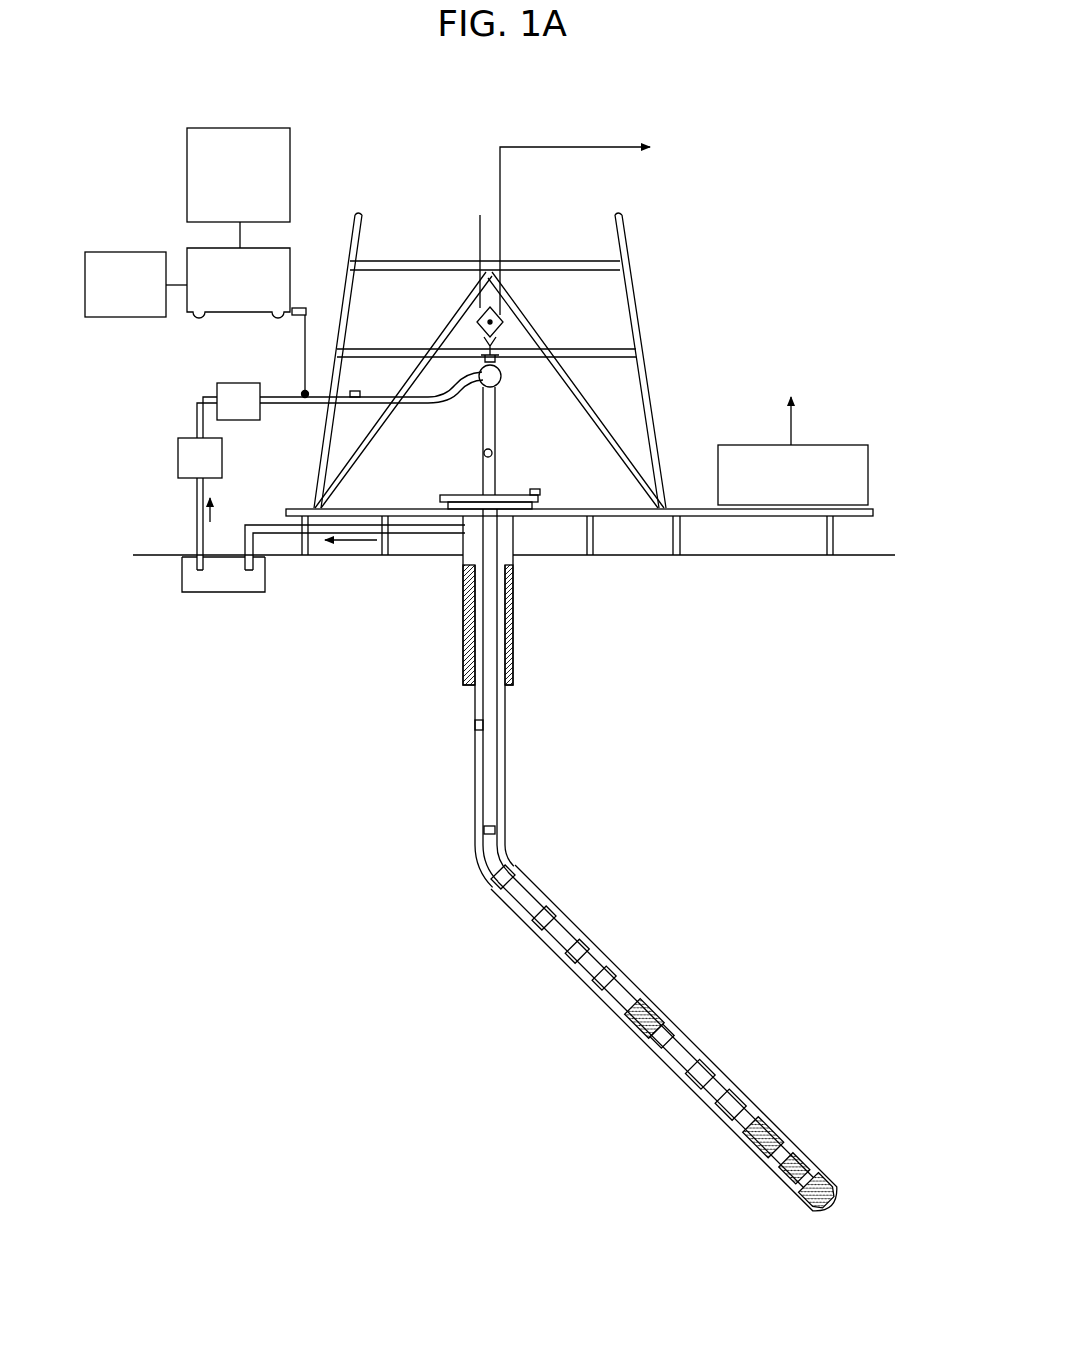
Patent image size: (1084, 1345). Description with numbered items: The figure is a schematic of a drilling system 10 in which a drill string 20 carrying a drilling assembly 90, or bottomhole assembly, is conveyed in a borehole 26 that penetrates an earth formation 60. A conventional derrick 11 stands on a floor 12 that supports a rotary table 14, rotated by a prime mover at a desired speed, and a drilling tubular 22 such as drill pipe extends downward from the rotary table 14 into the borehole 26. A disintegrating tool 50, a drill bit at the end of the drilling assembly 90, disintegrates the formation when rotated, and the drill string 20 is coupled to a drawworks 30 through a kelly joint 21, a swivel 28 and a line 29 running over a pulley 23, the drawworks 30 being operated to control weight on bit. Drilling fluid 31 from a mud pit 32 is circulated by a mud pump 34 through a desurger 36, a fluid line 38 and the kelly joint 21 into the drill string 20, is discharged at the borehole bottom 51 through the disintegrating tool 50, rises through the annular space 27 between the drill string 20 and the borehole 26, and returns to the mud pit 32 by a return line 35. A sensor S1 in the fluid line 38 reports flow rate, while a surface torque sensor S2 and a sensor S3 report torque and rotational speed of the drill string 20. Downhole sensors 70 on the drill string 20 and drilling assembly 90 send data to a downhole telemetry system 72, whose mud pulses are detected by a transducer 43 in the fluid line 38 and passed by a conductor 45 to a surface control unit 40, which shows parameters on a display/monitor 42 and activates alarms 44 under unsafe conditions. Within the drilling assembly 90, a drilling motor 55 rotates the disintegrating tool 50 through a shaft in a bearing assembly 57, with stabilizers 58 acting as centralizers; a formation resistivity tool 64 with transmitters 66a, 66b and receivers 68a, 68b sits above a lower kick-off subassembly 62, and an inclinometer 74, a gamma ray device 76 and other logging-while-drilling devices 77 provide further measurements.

The drilling system 10 is at (406, 161).
The derrick 11 is at (647, 363).
The floor 12 is at (668, 507).
The rotary table 14 is at (508, 493).
The drill string 20 is at (497, 702).
The kelly joint 21 is at (497, 437).
The drilling tubular 22 is at (482, 755).
The pulley 23 is at (501, 369).
The borehole 26 is at (508, 860).
The annular space 27 is at (530, 887).
The swivel 28 is at (462, 399).
The line 29 is at (502, 243).
The drawworks 30 is at (847, 445).
The drilling fluid 31 is at (192, 581).
The mud pit 32 is at (255, 587).
The mud pump 34 is at (178, 457).
The return line 35 is at (430, 535).
The desurger 36 is at (235, 382).
The fluid line 38 is at (313, 406).
The surface control unit 40 is at (208, 246).
The display/monitor 42 is at (242, 127).
The transducer 43 is at (304, 391).
The alarms 44 is at (145, 320).
The conductor 45 is at (298, 306).
The disintegrating tool 50 is at (835, 1197).
The borehole bottom 51 is at (827, 1212).
The drilling motor 55 is at (634, 983).
The bearing assembly 57 is at (765, 1170).
The stabilizers 58 is at (663, 1008).
The earth formation 60 is at (330, 933).
The lower kick-off subassembly 62 is at (773, 1127).
The formation resistivity tool 64 is at (720, 1105).
The transmitter 66a is at (672, 1040).
The transmitter 66b is at (742, 1120).
The receiver 68a is at (702, 1080).
The receiver 68b is at (712, 1046).
The downhole sensors 70 is at (538, 922).
The downhole telemetry system 72 is at (488, 830).
The inclinometer 74 is at (718, 1080).
The gamma ray device 76 is at (757, 1101).
The logging-while-drilling devices 77 is at (573, 976).
The drilling assembly 90 is at (610, 946).
The sensor S1 is at (357, 391).
The surface torque sensor S2 is at (483, 453).
The sensor S3 is at (533, 494).